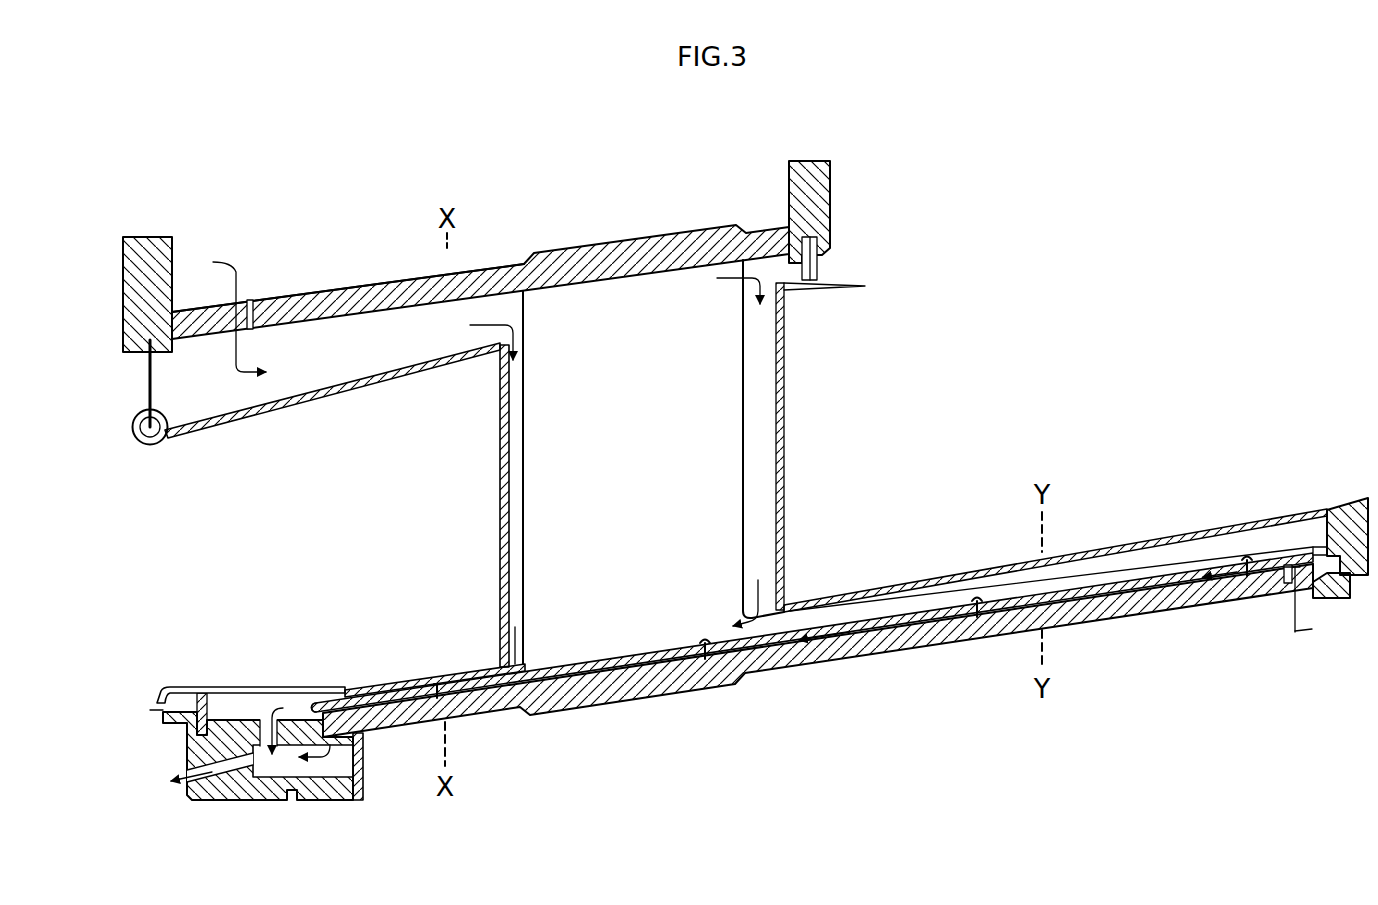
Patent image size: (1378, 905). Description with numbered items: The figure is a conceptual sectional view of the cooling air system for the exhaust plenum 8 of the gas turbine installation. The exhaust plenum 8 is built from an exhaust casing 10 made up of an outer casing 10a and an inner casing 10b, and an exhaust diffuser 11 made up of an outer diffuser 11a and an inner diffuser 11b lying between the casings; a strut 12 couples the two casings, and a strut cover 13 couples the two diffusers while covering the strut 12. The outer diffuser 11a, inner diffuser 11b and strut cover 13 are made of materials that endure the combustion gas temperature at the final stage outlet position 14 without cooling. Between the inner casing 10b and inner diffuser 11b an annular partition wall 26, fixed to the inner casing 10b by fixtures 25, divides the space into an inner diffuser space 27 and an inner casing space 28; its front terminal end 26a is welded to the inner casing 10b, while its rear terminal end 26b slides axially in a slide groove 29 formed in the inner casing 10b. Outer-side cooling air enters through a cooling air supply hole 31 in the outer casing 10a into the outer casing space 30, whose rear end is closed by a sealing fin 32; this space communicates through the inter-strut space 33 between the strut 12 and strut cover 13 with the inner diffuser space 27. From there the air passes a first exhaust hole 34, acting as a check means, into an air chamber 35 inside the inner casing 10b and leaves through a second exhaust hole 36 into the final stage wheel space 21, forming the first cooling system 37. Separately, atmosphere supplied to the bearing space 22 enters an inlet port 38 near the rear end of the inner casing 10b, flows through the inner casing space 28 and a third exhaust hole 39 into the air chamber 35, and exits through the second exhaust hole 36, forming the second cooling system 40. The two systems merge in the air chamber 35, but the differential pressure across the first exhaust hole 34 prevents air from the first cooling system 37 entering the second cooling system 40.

The exhaust plenum 8 is at (833, 150).
The exhaust casing 10 is at (629, 240).
The outer casing 10a is at (393, 298).
The inner casing 10b is at (643, 684).
The exhaust diffuser 11 is at (292, 410).
The outer diffuser 11a is at (375, 386).
The inner diffuser 11b is at (456, 666).
The strut 12 is at (619, 478).
The strut cover 13 is at (786, 398).
The final stage outlet position 14 is at (129, 568).
The final stage wheel space 21 is at (107, 797).
The bearing space 22 is at (1175, 772).
The fixtures 25 is at (972, 597).
The annular partition wall 26 is at (1037, 593).
The front terminal end 26a is at (312, 710).
The rear terminal end 26b is at (1316, 550).
The inner diffuser space 27 is at (397, 688).
The inner casing space 28 is at (1097, 604).
The slide groove 29 is at (1329, 508).
The outer casing space 30 is at (355, 361).
The cooling air supply hole 31 is at (254, 306).
The sealing fin 32 is at (812, 274).
The inter-strut space 33 is at (762, 484).
The first exhaust hole 34 is at (262, 719).
The air chamber 35 is at (330, 778).
The second exhaust hole 36 is at (232, 776).
The first cooling system 37 is at (274, 372).
The inlet port 38 is at (1285, 585).
The third exhaust hole 39 is at (364, 752).
The second cooling system 40 is at (873, 636).